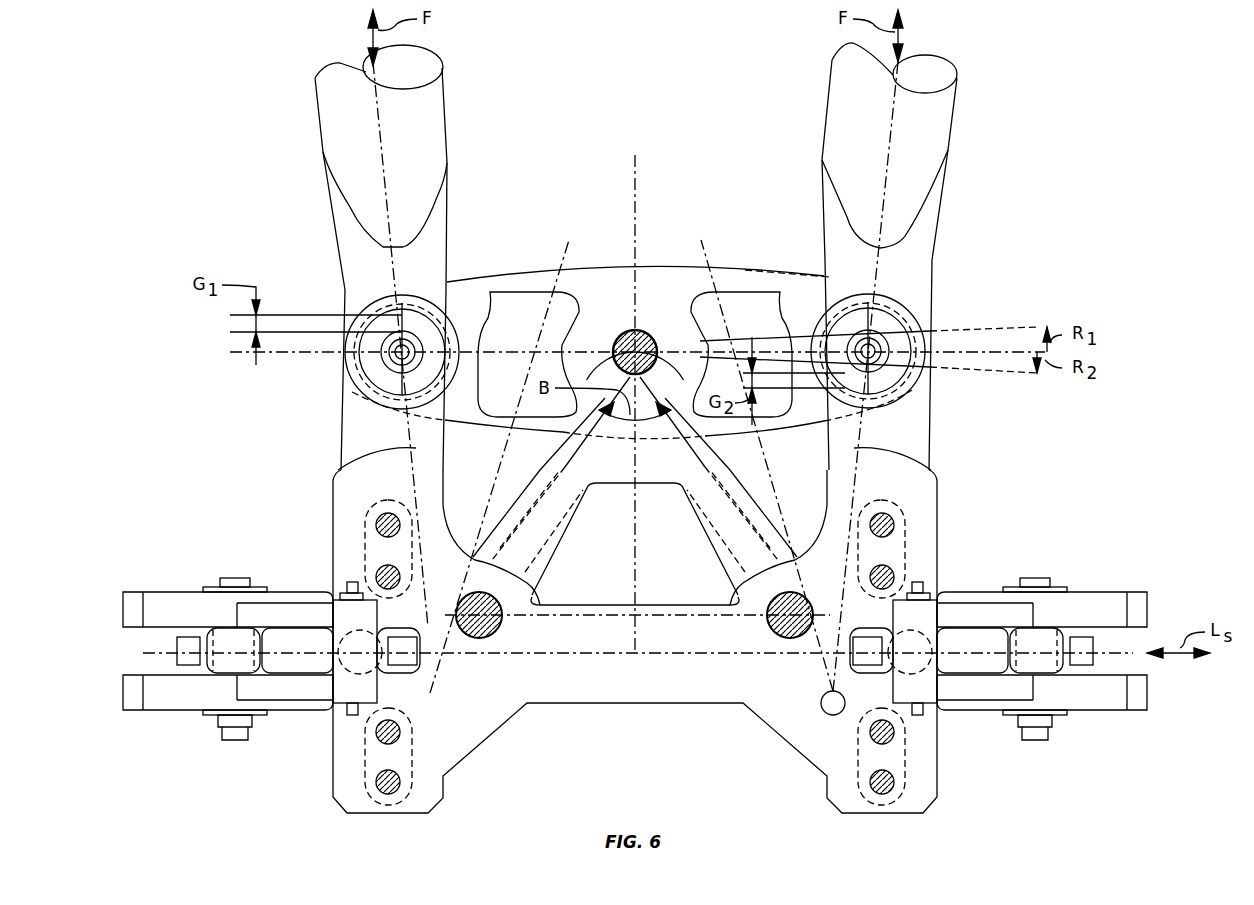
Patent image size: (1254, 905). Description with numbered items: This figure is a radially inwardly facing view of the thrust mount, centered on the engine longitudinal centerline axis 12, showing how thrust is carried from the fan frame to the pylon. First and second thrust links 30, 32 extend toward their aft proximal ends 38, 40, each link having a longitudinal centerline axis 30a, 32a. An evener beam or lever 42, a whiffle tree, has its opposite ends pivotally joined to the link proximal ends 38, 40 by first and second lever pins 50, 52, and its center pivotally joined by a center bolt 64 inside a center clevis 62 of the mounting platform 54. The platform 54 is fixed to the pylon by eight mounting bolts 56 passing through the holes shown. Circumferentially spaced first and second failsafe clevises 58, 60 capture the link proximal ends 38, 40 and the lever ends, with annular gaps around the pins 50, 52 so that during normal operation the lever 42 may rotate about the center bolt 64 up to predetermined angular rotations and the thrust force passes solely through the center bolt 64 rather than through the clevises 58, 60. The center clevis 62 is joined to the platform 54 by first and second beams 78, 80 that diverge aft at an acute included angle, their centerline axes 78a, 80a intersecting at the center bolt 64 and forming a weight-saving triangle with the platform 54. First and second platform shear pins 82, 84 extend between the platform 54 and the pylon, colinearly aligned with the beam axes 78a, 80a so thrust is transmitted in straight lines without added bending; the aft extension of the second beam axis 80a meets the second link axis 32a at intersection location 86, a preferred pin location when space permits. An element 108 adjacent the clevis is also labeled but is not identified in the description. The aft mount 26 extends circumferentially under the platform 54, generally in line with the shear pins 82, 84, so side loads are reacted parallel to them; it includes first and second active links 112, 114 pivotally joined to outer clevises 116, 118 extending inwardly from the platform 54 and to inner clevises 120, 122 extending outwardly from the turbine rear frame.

The longitudinal centerline axis 12 is at (637, 180).
The aft mount 26 is at (962, 714).
The first thrust link 30 is at (447, 96).
The first thrust link centerline axis 30a is at (338, 462).
The second thrust link 32 is at (832, 77).
The second thrust link centerline axis 32a is at (931, 462).
The first thrust link proximal end 38 is at (349, 307).
The second thrust link proximal end 40 is at (931, 291).
The evener beam or lever 42 is at (518, 282).
The first lever pin 50 is at (410, 326).
The second lever pin 52 is at (880, 322).
The mounting platform 54 is at (333, 530).
The mounting bolts 56 is at (388, 794).
The first failsafe clevis 58 is at (347, 399).
The second failsafe clevis 60 is at (929, 389).
The center clevis 62 is at (703, 273).
The center bolt 64 is at (612, 347).
The first beam 78 is at (545, 565).
The first beam centerline axis 78a is at (556, 462).
The second beam 80 is at (720, 561).
The second beam centerline axis 80a is at (727, 507).
The first platform shear pin 82 is at (497, 637).
The second platform shear pin 84 is at (781, 637).
The intersection location 86 is at (825, 716).
The bearing ring 108 is at (362, 360).
The first active link 112 is at (177, 646).
The second active link 114 is at (1093, 658).
The first outer clevis 116 is at (287, 690).
The second outer clevis 118 is at (993, 703).
The first inner clevis 120 is at (174, 697).
The second inner clevis 122 is at (1103, 708).